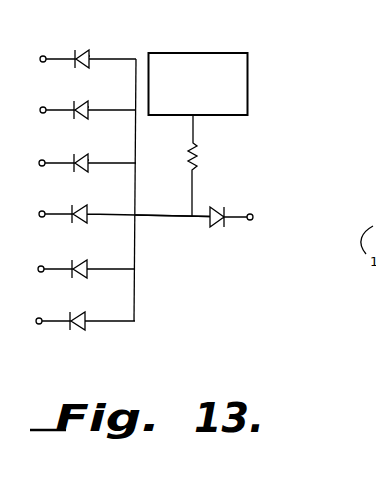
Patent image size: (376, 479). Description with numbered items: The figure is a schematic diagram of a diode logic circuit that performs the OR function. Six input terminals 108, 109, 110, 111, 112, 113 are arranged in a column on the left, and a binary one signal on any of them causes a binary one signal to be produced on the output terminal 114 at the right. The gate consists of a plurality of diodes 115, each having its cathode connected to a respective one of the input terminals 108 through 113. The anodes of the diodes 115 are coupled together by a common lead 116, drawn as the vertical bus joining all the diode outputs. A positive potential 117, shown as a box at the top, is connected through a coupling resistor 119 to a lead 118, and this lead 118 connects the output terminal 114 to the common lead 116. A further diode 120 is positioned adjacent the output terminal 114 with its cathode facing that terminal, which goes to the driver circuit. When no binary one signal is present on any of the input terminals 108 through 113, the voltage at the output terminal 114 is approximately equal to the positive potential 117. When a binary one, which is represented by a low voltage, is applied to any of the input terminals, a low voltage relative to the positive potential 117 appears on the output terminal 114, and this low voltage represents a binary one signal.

The input terminal 108 is at (44, 56).
The input terminal 109 is at (48, 89).
The input terminal 110 is at (46, 142).
The input terminal 111 is at (45, 195).
The input terminal 112 is at (46, 249).
The input terminal 113 is at (43, 302).
The output terminal 114 is at (248, 216).
The diodes 115 is at (91, 163).
The lead 116 is at (135, 166).
The positive potential 117 is at (175, 53).
The lead 118 is at (172, 221).
The coupling resistor 119 is at (197, 154).
The diode 120 is at (208, 225).